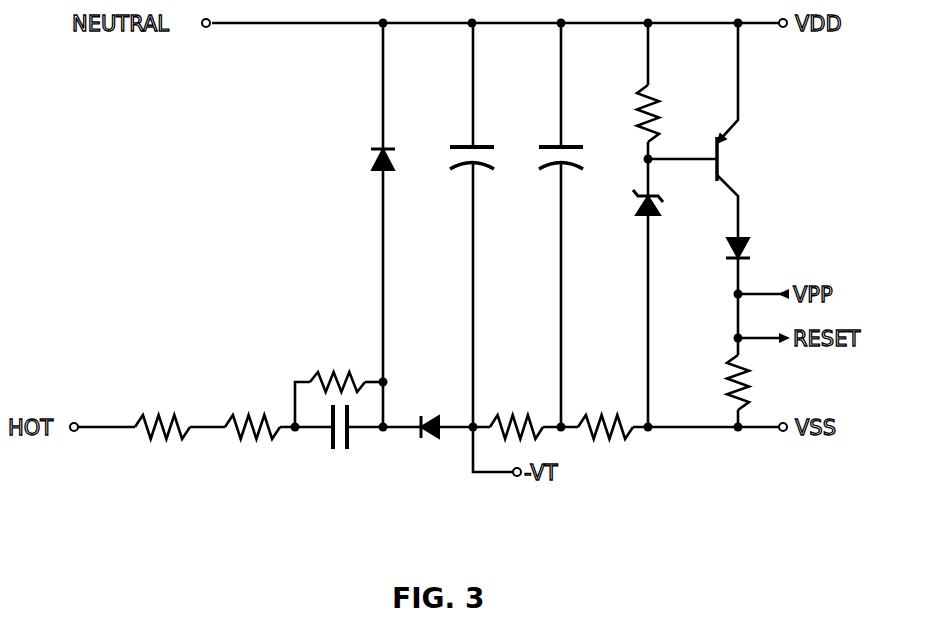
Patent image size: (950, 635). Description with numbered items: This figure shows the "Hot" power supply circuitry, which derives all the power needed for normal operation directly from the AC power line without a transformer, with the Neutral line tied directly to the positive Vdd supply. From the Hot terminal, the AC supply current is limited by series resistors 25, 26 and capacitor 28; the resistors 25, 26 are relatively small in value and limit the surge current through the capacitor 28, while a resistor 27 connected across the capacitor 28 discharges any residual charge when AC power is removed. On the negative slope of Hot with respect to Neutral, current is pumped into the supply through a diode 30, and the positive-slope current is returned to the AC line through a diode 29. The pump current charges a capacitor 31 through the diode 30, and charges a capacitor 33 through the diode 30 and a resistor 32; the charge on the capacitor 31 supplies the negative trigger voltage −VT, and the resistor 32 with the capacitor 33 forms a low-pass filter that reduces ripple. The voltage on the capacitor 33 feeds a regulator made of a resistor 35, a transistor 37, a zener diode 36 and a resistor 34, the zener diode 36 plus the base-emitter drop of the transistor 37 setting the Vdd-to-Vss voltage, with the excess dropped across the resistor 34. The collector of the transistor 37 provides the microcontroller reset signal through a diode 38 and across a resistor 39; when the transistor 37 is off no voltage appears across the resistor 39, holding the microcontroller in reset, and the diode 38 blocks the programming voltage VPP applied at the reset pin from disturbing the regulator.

The resistor 25 is at (167, 412).
The resistor 26 is at (256, 412).
The resistor 27 is at (345, 374).
The capacitor 28 is at (333, 450).
The diode 29 is at (373, 158).
The diode 30 is at (428, 438).
The capacitor 31 is at (462, 145).
The resistor 32 is at (522, 416).
The capacitor 33 is at (552, 145).
The resistor 34 is at (603, 440).
The resistor 35 is at (637, 110).
The zener diode 36 is at (638, 207).
The transistor 37 is at (720, 168).
The diode 38 is at (745, 242).
The resistor 39 is at (731, 362).